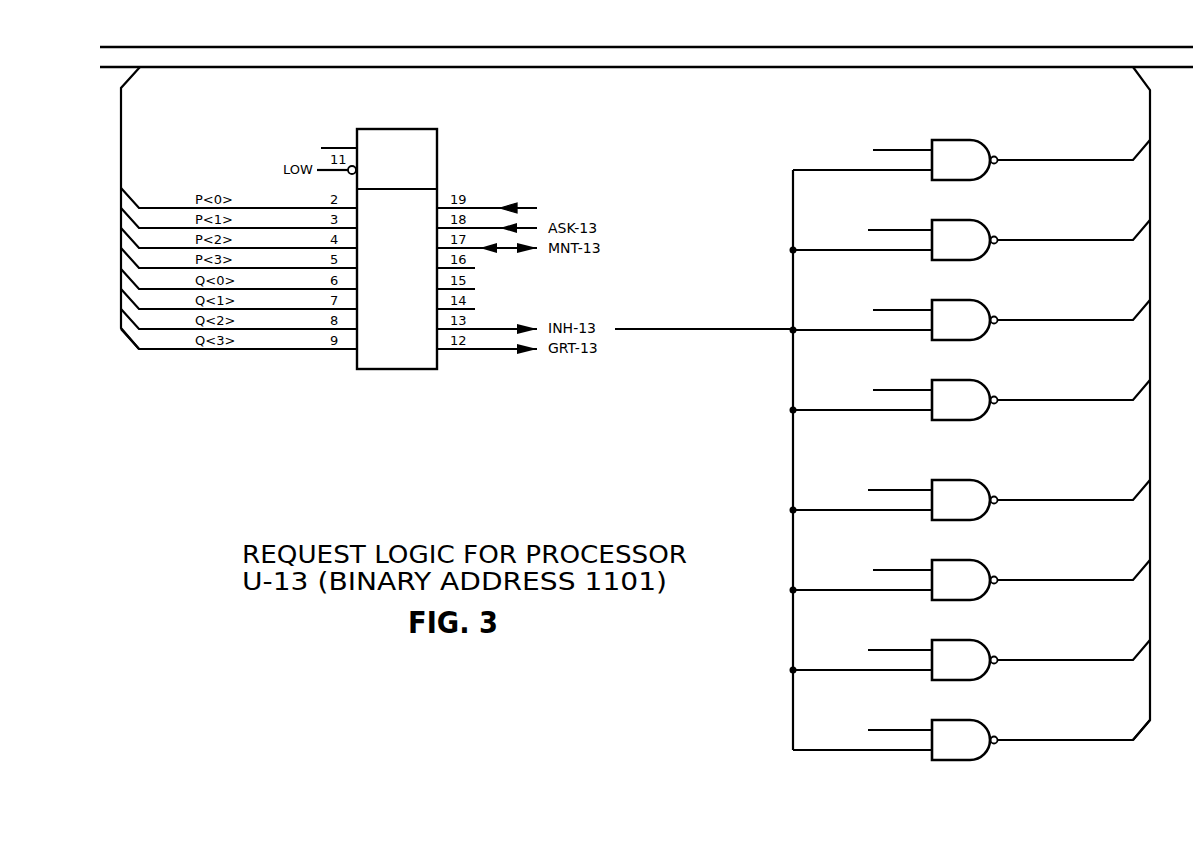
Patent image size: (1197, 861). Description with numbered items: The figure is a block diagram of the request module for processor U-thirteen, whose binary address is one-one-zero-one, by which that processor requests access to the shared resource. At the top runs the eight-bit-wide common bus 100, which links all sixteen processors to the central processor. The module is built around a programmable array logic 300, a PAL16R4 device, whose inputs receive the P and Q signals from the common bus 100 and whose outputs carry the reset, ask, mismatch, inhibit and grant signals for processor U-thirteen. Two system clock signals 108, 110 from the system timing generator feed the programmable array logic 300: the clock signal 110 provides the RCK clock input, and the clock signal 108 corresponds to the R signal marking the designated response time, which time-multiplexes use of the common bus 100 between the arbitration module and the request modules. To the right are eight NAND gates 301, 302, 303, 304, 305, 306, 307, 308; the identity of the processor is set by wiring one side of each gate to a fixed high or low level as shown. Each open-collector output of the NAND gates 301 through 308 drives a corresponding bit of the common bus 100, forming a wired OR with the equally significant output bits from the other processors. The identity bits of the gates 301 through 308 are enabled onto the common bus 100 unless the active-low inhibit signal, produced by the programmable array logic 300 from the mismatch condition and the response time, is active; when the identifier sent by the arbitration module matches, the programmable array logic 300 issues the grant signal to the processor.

The common bus 100 is at (783, 70).
The system clock signal 108 is at (492, 207).
The system clock signal 110 is at (320, 147).
The programmable array logic 300 is at (424, 295).
The NAND gate 301 is at (963, 162).
The NAND gate 302 is at (963, 242).
The NAND gate 303 is at (963, 322).
The NAND gate 304 is at (963, 402).
The NAND gate 305 is at (963, 502).
The NAND gate 306 is at (963, 582).
The NAND gate 307 is at (963, 662).
The NAND gate 308 is at (963, 742).